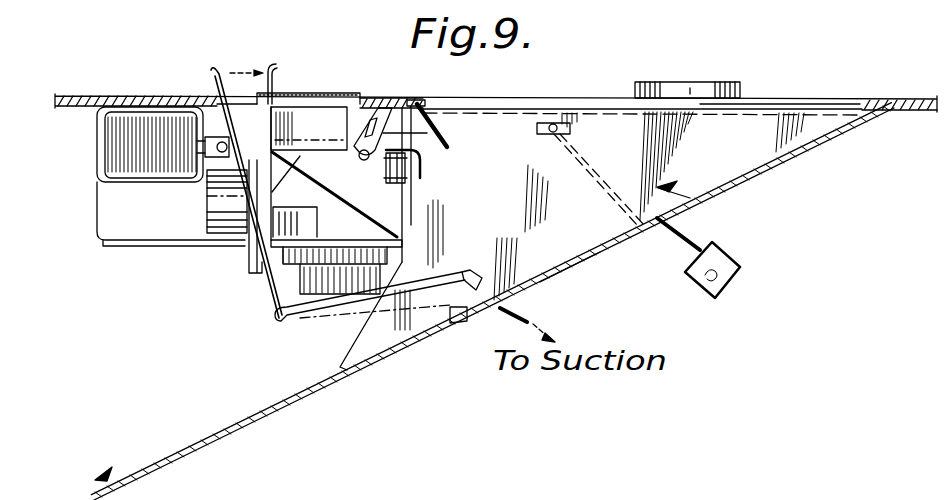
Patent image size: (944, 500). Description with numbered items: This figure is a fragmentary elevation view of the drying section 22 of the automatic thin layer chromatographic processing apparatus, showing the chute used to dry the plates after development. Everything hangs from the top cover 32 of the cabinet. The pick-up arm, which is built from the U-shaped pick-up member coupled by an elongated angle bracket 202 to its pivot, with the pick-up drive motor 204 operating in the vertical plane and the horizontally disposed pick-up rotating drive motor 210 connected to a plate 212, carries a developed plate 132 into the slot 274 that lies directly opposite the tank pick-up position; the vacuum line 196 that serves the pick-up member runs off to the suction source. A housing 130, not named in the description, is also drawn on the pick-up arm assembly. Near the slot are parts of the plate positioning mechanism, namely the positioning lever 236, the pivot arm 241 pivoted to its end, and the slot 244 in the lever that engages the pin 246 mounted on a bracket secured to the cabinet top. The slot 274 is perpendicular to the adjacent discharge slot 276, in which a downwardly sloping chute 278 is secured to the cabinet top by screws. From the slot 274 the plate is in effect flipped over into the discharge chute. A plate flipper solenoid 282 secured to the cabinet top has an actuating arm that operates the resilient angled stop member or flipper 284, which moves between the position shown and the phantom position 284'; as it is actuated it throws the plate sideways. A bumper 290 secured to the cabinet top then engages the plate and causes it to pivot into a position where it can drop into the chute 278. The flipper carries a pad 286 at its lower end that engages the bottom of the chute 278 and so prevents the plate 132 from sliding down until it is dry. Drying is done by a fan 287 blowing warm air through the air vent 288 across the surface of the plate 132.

The top cover 32 is at (76, 94).
The plate flipper solenoid 282 is at (158, 133).
The flipper 284 is at (246, 168).
The phantom flipper position 284' is at (305, 69).
The slot 274 is at (275, 95).
The plate 132 is at (364, 98).
The pin 246 is at (437, 104).
The bumper 290 is at (716, 88).
The discharge slot 276 is at (783, 101).
The control box 130 is at (341, 184).
The pivot arm 241 is at (453, 134).
The angle bracket 202 is at (292, 172).
The slot 244 is at (357, 162).
The positioning lever 236 is at (416, 156).
The air vent 288 is at (550, 134).
The plate 212 is at (363, 240).
The drying section 22 is at (680, 187).
The pick-up drive motor 204 is at (223, 202).
The pick-up rotating drive motor 210 is at (337, 282).
The pad 286 is at (483, 290).
The chute 278 is at (573, 267).
The fan 287 is at (740, 267).
The vacuum line 196 is at (522, 300).